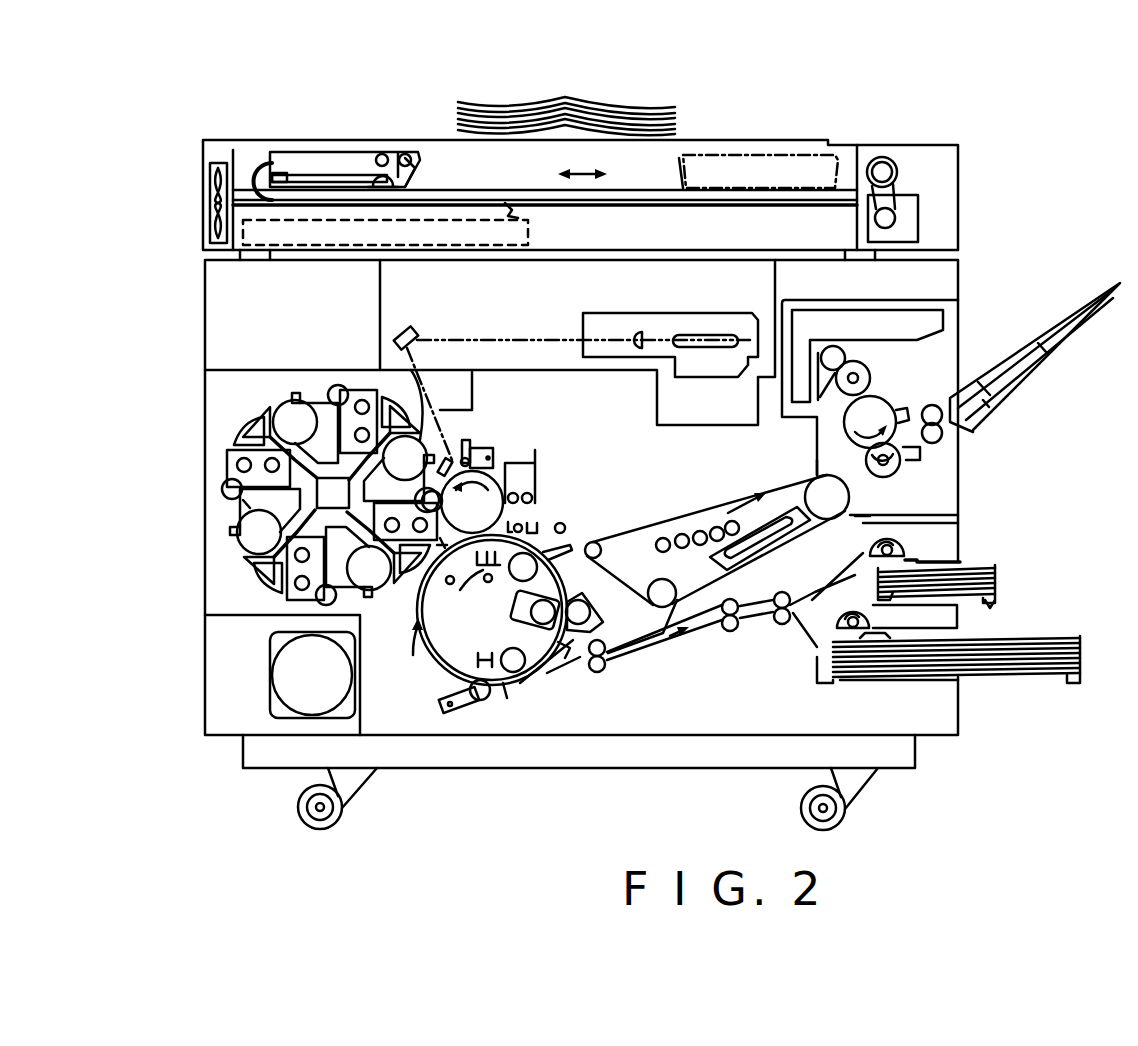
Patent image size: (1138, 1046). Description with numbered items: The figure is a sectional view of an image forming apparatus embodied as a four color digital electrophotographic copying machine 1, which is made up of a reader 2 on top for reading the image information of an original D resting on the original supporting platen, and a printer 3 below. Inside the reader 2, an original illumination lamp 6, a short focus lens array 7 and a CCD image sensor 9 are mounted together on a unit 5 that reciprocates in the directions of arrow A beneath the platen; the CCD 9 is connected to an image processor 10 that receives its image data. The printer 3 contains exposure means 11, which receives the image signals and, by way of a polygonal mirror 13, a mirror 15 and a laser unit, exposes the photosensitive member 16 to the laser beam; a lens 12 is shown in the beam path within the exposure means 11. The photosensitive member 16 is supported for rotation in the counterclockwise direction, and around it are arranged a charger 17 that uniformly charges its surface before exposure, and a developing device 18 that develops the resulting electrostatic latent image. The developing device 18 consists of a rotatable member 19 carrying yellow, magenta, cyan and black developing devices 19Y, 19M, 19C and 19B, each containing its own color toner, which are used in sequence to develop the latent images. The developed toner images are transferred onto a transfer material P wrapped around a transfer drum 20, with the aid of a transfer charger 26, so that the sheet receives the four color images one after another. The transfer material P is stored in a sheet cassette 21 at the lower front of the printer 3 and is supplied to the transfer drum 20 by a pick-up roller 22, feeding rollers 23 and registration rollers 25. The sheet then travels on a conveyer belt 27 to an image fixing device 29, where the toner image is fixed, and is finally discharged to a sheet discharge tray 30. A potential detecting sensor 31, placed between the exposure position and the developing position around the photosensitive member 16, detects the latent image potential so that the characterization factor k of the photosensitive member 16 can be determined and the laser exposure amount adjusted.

The copying machine 1 is at (751, 60).
The reader 2 is at (963, 210).
The printer 3 is at (965, 316).
The unit 5 is at (318, 165).
The original illumination lamp 6 is at (410, 152).
The short focus lens array 7 is at (416, 168).
The CCD (image sensor) 9 is at (380, 155).
The image processor 10 is at (530, 230).
The exposure means 11 is at (573, 320).
The lens 12 is at (612, 338).
The polygonal mirror 13 is at (708, 340).
The mirror 15 is at (417, 335).
The photosensitive member 16 is at (490, 488).
The charger 17 is at (492, 452).
The developing device 18 is at (232, 504).
The rotatable member 19 is at (265, 420).
The black developing device 19B is at (282, 403).
The yellow developing device 19Y is at (385, 403).
The magenta developing device 19M is at (379, 590).
The cyan developing device 19C is at (252, 552).
The transfer drum 20 is at (452, 652).
The sheet cassette 21 is at (972, 612).
The pick-up roller 22 is at (798, 618).
The feeding rollers 23 is at (725, 632).
The registration rollers 25 is at (600, 672).
The transfer charger 26 is at (507, 610).
The conveyer belt 27 is at (640, 537).
The image fixing device 29 is at (872, 395).
The sheet discharge tray 30 is at (1047, 340).
The potential detecting sensor 31 is at (470, 445).
The original D is at (613, 108).
The transfer material (sheet) P is at (968, 595).